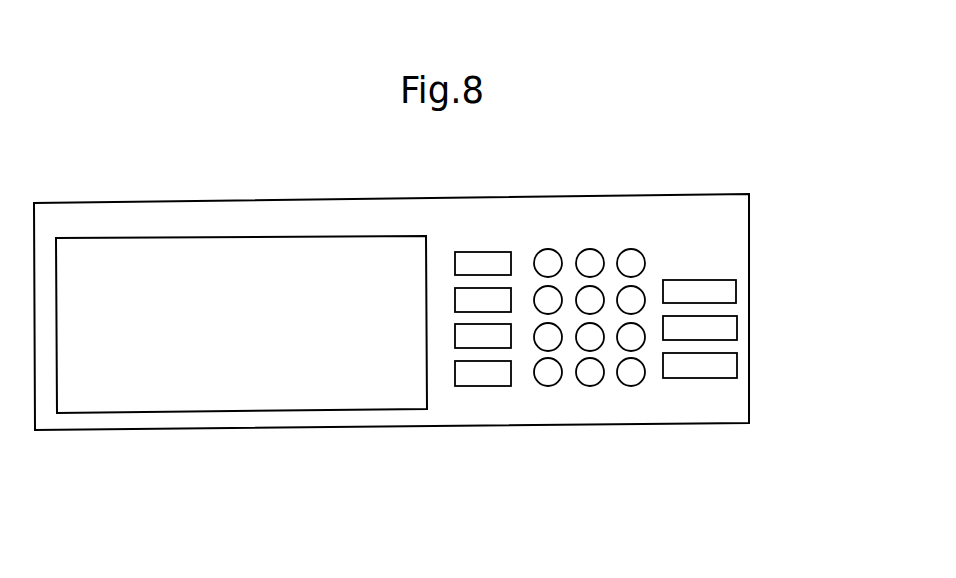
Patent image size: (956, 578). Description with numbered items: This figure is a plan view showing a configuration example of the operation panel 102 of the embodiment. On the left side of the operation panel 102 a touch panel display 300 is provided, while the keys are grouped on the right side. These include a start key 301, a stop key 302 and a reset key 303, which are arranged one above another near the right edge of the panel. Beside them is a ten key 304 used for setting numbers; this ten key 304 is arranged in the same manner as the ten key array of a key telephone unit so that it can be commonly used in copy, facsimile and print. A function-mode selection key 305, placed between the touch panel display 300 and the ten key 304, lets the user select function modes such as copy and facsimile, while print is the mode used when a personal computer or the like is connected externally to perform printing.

The operation panel 102 is at (365, 170).
The touch panel display 300 is at (153, 237).
The start key 301 is at (737, 360).
The stop key 302 is at (737, 323).
The reset key 303 is at (736, 283).
The ten key 304 is at (583, 227).
The function-mode selection key 305 is at (478, 395).